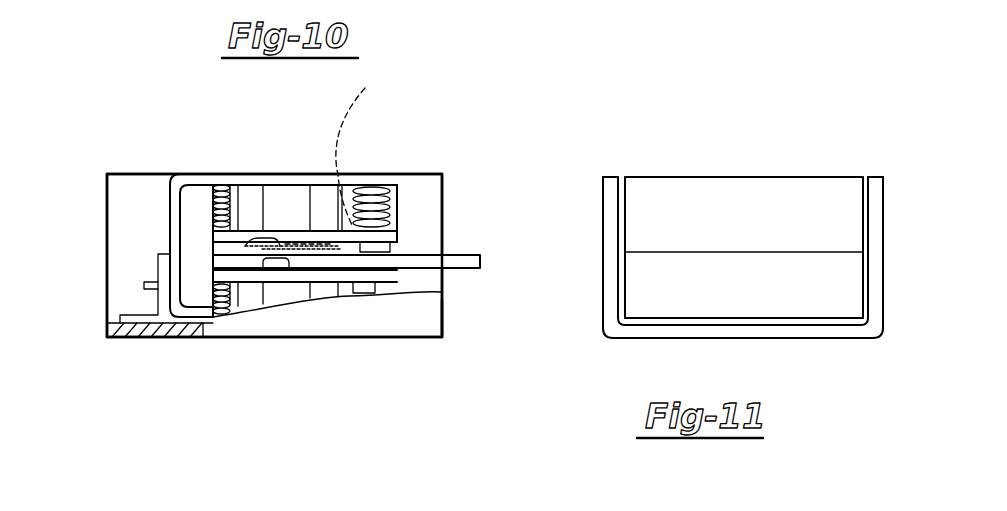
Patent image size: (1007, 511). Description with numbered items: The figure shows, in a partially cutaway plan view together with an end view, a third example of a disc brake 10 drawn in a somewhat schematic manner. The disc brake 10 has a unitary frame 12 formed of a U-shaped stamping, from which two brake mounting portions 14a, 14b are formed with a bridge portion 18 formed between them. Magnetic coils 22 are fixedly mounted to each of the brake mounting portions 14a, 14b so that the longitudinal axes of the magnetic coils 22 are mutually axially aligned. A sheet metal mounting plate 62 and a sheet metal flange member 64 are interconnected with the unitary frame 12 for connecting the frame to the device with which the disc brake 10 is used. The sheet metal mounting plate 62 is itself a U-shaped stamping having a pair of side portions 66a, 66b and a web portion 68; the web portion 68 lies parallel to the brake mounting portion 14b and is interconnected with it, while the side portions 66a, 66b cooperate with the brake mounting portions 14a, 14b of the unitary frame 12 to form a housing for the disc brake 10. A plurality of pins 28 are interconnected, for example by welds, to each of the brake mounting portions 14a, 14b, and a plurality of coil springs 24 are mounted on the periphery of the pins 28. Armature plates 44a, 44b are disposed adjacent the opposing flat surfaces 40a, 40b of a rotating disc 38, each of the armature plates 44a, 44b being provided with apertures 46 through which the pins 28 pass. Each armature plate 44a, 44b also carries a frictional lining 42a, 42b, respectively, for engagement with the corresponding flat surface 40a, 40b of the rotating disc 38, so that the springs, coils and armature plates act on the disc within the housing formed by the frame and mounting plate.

In FIG. 10, the disc brake 10 is at (441, 113).
In FIG. 11, the disc brake 10 is at (716, 145).
In FIG. 10, the unitary frame 12 is at (403, 167).
In FIG. 11, the unitary frame 12 is at (825, 173).
In FIG. 10, the brake mounting portion 14a is at (262, 180).
In FIG. 10, the brake mounting portion 14b is at (203, 324).
In FIG. 10, the bridge portion 18 is at (175, 222).
In FIG. 11, the bridge portion 18 is at (675, 230).
In FIG. 10, the magnetic coils 22 is at (332, 214).
In FIG. 10, the coil springs 24 is at (224, 184).
In FIG. 10, the pins 28 is at (343, 157).
In FIG. 10, the rotating disc 38 is at (473, 264).
In FIG. 10, the flat surface 40a is at (430, 255).
In FIG. 10, the flat surface 40b is at (465, 269).
In FIG. 10, the frictional lining 42a is at (212, 252).
In FIG. 10, the frictional lining 42b is at (285, 262).
In FIG. 10, the armature plate 44a is at (398, 232).
In FIG. 10, the armature plate 44b is at (285, 284).
In FIG. 10, the apertures 46 is at (302, 218).
In FIG. 10, the sheet metal mounting plate 62 is at (385, 343).
In FIG. 11, the sheet metal mounting plate 62 is at (619, 347).
In FIG. 10, the sheet metal flange member 64 is at (158, 262).
In FIG. 11, the sheet metal flange member 64 is at (832, 294).
In FIG. 10, the side portion 66a is at (441, 337).
In FIG. 11, the side portion 66a is at (880, 262).
In FIG. 10, the side portion 66b is at (165, 203).
In FIG. 11, the side portion 66b is at (612, 278).
In FIG. 10, the web portion 68 is at (147, 330).
In FIG. 11, the web portion 68 is at (770, 333).